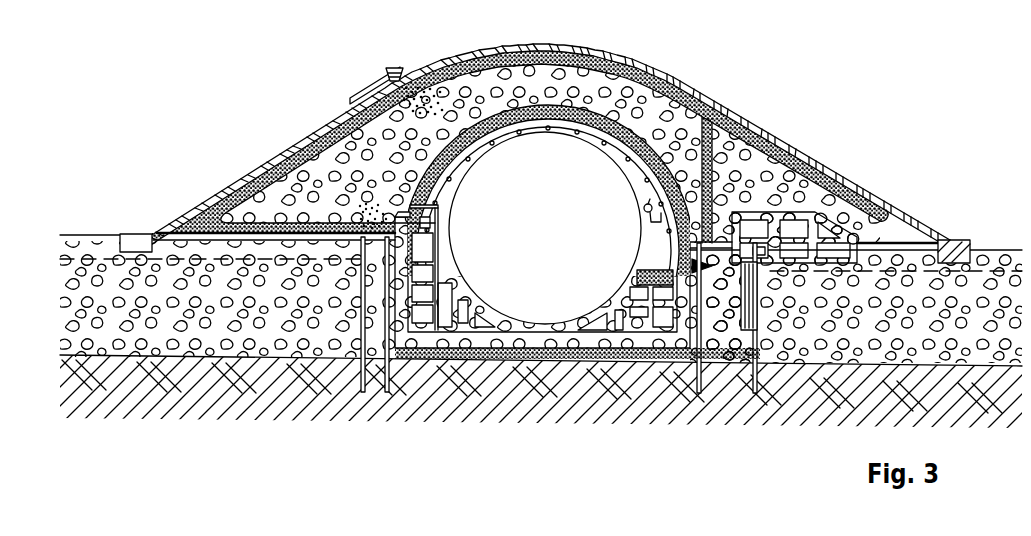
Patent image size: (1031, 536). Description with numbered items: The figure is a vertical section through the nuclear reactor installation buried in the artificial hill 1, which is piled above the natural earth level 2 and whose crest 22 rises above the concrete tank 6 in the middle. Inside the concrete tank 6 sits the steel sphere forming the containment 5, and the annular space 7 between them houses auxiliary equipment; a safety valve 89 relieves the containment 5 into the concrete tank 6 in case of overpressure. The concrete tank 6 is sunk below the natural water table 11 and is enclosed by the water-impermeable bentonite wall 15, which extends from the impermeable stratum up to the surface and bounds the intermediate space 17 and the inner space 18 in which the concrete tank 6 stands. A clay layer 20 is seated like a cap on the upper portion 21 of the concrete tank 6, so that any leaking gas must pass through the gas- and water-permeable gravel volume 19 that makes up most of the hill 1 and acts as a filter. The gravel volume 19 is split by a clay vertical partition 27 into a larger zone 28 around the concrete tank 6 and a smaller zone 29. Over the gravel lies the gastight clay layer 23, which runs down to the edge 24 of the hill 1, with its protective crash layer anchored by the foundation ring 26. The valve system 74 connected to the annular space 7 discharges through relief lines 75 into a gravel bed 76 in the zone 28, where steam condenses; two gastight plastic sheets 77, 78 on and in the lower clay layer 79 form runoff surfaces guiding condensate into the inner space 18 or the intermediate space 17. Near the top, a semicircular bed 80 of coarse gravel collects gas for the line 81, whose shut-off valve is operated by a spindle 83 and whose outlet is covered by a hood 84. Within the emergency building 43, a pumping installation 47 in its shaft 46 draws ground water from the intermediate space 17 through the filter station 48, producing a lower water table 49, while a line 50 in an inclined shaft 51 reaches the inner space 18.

The hill 1 is at (752, 120).
The natural earth level 2 is at (68, 235).
The containment 5 is at (480, 137).
The concrete tank 6 is at (603, 133).
The annular space 7 is at (563, 282).
The natural water table 11 is at (984, 268).
The wall 15 is at (752, 352).
The intermediate space 17 is at (365, 386).
The inner space 18 is at (520, 360).
The gravel volume 19 is at (492, 73).
The clay layer 20 is at (551, 112).
The upper portion of the concrete tank 21 is at (450, 162).
The crest of the hill 22 is at (622, 56).
The clay layer 23 is at (683, 85).
The edge of the hill 24 is at (160, 232).
The foundation ring 26 is at (132, 246).
The vertical partition 27 is at (689, 180).
The zone 28 is at (463, 206).
The zone 29 is at (796, 182).
The emergency building 43 is at (790, 218).
The shaft 46 is at (752, 294).
The pumping installation 47 is at (752, 318).
The filter station 48 is at (758, 247).
The lower water table 49 is at (719, 278).
The line 50 is at (640, 270).
The inclined shaft 51 is at (690, 247).
The valve system 74 is at (432, 222).
The relief lines 75 is at (400, 212).
The gravel bed 76 is at (365, 207).
The gastight sheet 77 is at (314, 230).
The gastight sheet 78 is at (303, 240).
The lower clay layer 79 is at (280, 228).
The semicircular bed of coarse gravel 80 is at (425, 96).
The line 81 is at (403, 78).
The spindle 83 is at (390, 78).
The hood 84 is at (366, 100).
The safety valve 89 is at (642, 205).